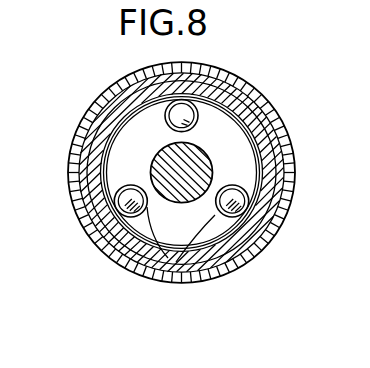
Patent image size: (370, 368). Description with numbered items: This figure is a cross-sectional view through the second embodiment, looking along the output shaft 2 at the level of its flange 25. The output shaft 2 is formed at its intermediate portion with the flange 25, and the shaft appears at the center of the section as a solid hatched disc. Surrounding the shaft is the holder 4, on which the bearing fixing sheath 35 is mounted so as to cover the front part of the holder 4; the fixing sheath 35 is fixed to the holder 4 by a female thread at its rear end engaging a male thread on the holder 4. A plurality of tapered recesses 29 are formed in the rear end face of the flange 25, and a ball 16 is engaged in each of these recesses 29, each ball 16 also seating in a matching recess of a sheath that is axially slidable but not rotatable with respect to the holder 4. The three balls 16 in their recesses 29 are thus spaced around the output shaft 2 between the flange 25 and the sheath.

The bearing fixing sheath 35 is at (102, 102).
The holder 4 is at (253, 103).
The flange 25 is at (247, 175).
The output shaft 2 is at (209, 157).
The tapered recesses 29 is at (117, 190).
The ball 16 is at (192, 227).